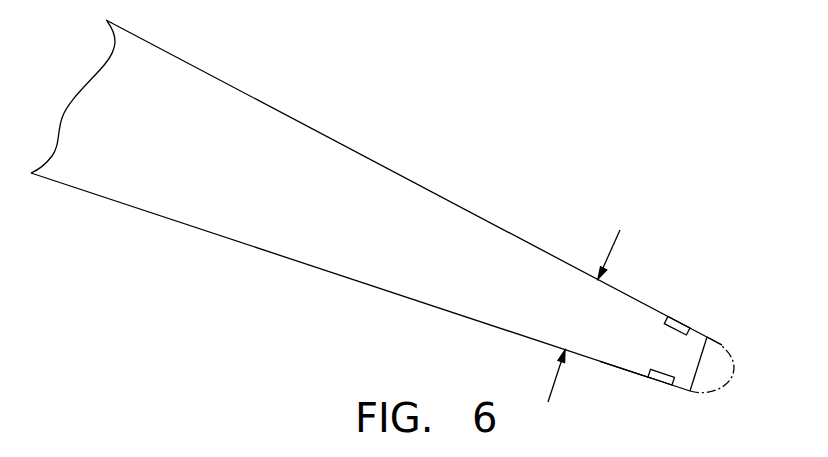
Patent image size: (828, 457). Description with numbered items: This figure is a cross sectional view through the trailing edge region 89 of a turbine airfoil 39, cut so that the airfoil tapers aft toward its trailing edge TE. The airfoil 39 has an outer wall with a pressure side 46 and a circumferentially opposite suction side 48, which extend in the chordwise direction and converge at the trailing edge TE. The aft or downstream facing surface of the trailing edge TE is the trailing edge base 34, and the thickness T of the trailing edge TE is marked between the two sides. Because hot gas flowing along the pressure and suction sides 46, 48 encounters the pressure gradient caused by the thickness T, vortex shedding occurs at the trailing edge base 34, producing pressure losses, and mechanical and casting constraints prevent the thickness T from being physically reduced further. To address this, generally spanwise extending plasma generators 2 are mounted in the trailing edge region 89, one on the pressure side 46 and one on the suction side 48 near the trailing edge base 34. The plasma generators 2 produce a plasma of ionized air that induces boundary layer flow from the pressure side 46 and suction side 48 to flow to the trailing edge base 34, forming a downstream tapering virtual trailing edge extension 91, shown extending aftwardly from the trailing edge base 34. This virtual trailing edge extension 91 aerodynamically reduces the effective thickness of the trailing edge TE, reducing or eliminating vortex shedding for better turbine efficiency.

The airfoil 39 is at (376, 205).
The suction side 48 is at (430, 187).
The pressure side 46 is at (193, 227).
The trailing edge TE is at (667, 352).
The trailing edge base 34 is at (722, 346).
The virtual trailing edge extension 91 is at (730, 386).
The plasma generator 2 is at (688, 322).
The thickness T is at (612, 243).
The trailing edge region 89 is at (623, 370).